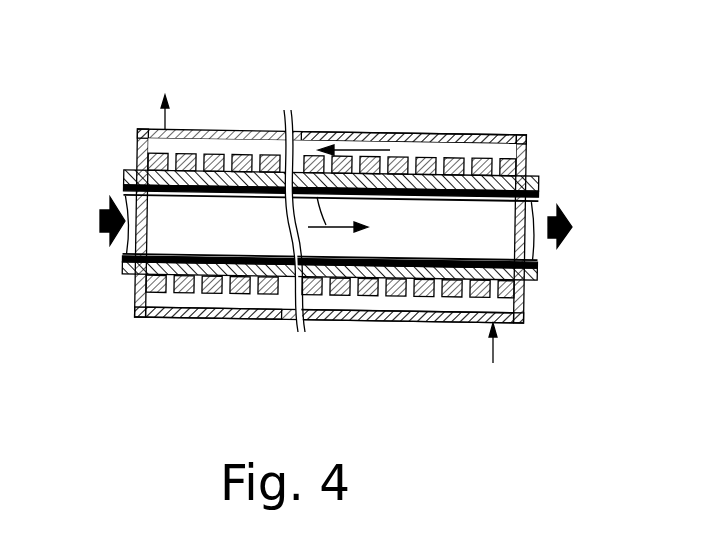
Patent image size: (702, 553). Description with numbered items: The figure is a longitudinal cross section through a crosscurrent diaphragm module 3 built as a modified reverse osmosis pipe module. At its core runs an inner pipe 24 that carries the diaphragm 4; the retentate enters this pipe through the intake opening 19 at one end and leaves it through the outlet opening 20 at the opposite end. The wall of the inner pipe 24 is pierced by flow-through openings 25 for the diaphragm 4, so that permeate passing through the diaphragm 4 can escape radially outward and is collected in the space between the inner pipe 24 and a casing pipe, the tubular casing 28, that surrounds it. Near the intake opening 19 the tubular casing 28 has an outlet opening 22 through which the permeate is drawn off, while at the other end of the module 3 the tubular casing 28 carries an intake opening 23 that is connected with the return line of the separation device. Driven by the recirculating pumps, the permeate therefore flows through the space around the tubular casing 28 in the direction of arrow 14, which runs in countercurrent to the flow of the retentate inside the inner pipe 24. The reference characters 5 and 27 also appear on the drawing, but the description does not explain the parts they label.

The crosscurrent diaphragm module 3 is at (477, 133).
The diaphragm 4 is at (290, 294).
The outer tube wall 5 is at (310, 133).
The arrow 14 is at (368, 153).
The intake opening 19 is at (115, 235).
The outlet opening 20 is at (520, 245).
The outlet opening 22 is at (163, 130).
The intake opening 23 is at (500, 327).
The inner pipe 24 is at (445, 158).
The flow-through openings 25 is at (413, 296).
The housing bottom wall 27 is at (167, 320).
The tubular casing 28 is at (321, 320).